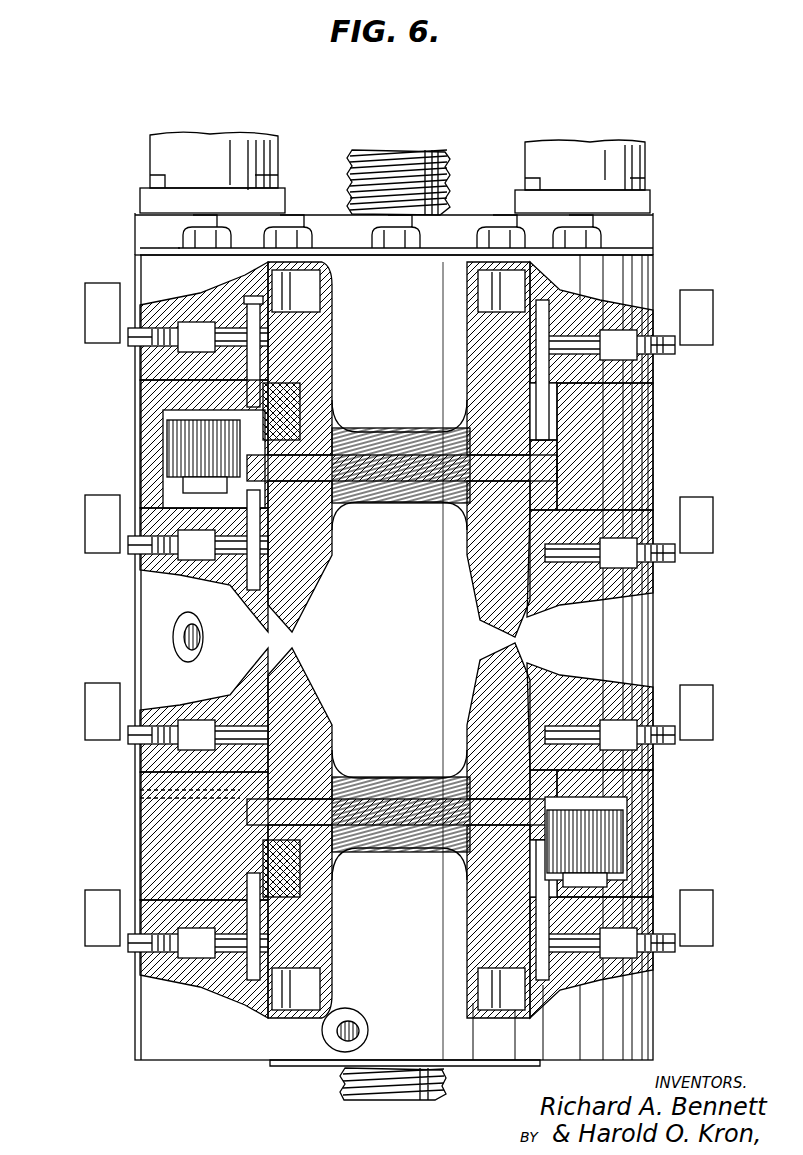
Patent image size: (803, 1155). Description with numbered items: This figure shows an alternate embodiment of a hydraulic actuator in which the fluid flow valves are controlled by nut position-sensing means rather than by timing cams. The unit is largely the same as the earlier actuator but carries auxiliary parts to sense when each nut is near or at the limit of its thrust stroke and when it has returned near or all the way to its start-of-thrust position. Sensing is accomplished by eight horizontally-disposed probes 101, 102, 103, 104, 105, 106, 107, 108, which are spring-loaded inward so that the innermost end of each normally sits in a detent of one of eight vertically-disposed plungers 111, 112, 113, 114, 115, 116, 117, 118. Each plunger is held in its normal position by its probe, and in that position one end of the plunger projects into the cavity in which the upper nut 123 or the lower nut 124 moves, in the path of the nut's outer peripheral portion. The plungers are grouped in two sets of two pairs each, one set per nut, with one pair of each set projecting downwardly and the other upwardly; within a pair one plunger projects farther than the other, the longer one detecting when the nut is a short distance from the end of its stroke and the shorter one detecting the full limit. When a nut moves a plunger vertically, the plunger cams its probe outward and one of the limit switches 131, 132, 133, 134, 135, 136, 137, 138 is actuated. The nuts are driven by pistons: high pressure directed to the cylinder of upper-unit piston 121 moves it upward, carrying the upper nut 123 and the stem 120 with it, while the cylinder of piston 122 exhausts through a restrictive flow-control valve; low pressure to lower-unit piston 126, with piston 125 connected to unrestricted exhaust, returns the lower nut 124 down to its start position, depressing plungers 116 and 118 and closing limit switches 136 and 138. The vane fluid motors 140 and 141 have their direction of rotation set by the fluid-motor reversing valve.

The probe 101 is at (633, 382).
The probe 102 is at (210, 314).
The probe 103 is at (620, 573).
The probe 104 is at (625, 774).
The probe 105 is at (165, 760).
The probe 106 is at (625, 975).
The probe 107 is at (160, 578).
The probe 108 is at (155, 976).
The plunger 111 is at (545, 378).
The plunger 112 is at (250, 370).
The plunger 113 is at (565, 500).
The plunger 114 is at (550, 788).
The plunger 115 is at (250, 790).
The plunger 116 is at (545, 880).
The plunger 117 is at (210, 600).
The plunger 118 is at (262, 887).
The stem 120 is at (412, 150).
The upper-unit piston 121 is at (482, 572).
The piston 122 is at (485, 352).
The nut 123 is at (446, 430).
The nut 124 is at (452, 762).
The piston 125 is at (482, 910).
The lower-unit piston 126 is at (482, 700).
The limit switch 131 is at (637, 305).
The limit switch 132 is at (174, 297).
The limit switch 133 is at (636, 523).
The limit switch 134 is at (637, 699).
The limit switch 135 is at (174, 699).
The limit switch 136 is at (637, 905).
The limit switch 137 is at (174, 509).
The limit switch 138 is at (175, 905).
The vane fluid motor 140 is at (207, 150).
The vane fluid motor 141 is at (580, 150).